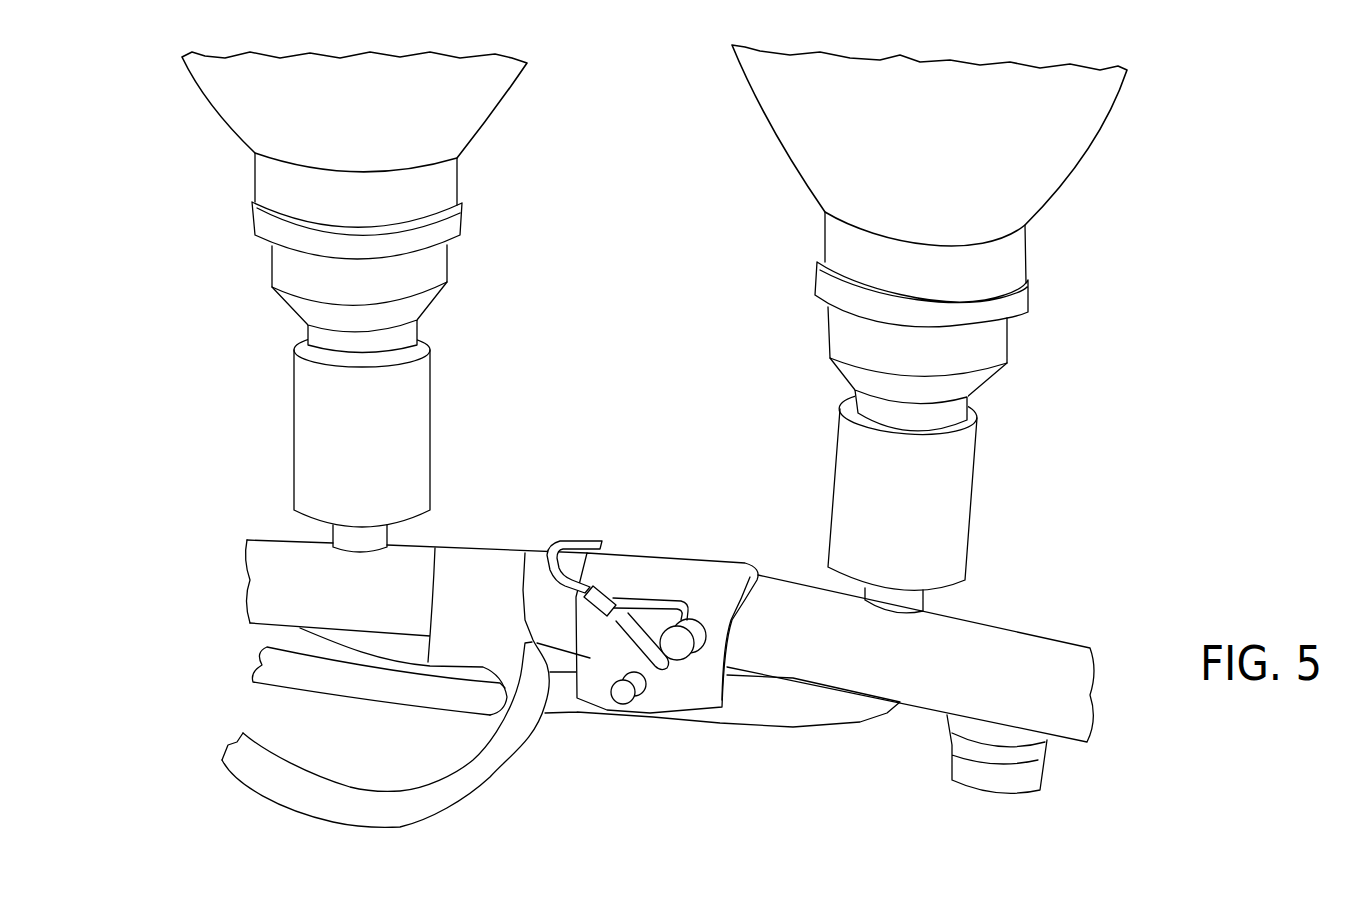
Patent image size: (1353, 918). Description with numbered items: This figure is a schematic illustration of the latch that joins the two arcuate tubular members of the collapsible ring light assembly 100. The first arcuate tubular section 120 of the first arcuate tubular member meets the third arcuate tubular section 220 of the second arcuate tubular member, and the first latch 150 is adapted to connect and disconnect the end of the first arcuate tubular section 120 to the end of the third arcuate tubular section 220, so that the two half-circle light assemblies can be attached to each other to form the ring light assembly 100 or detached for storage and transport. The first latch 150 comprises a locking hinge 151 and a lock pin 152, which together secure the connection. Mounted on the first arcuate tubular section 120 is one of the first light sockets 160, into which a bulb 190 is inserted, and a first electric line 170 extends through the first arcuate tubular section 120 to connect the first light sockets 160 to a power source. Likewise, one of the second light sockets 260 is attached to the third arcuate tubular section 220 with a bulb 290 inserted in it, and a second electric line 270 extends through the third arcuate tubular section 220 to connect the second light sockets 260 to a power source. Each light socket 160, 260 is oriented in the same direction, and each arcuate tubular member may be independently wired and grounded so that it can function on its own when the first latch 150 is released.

The collapsible ring light assembly 100 is at (1252, 312).
The first arcuate tubular section 120 is at (990, 627).
The first latch 150 is at (680, 556).
The locking hinge 151 is at (708, 578).
The lock pin 152 is at (686, 652).
The first light socket 160 is at (972, 495).
The first electric line 170 is at (273, 693).
The bulb 190 is at (1080, 152).
The third arcuate tubular section 220 is at (410, 557).
The second light socket 260 is at (430, 418).
The second electric line 270 is at (497, 766).
The bulb 290 is at (487, 127).